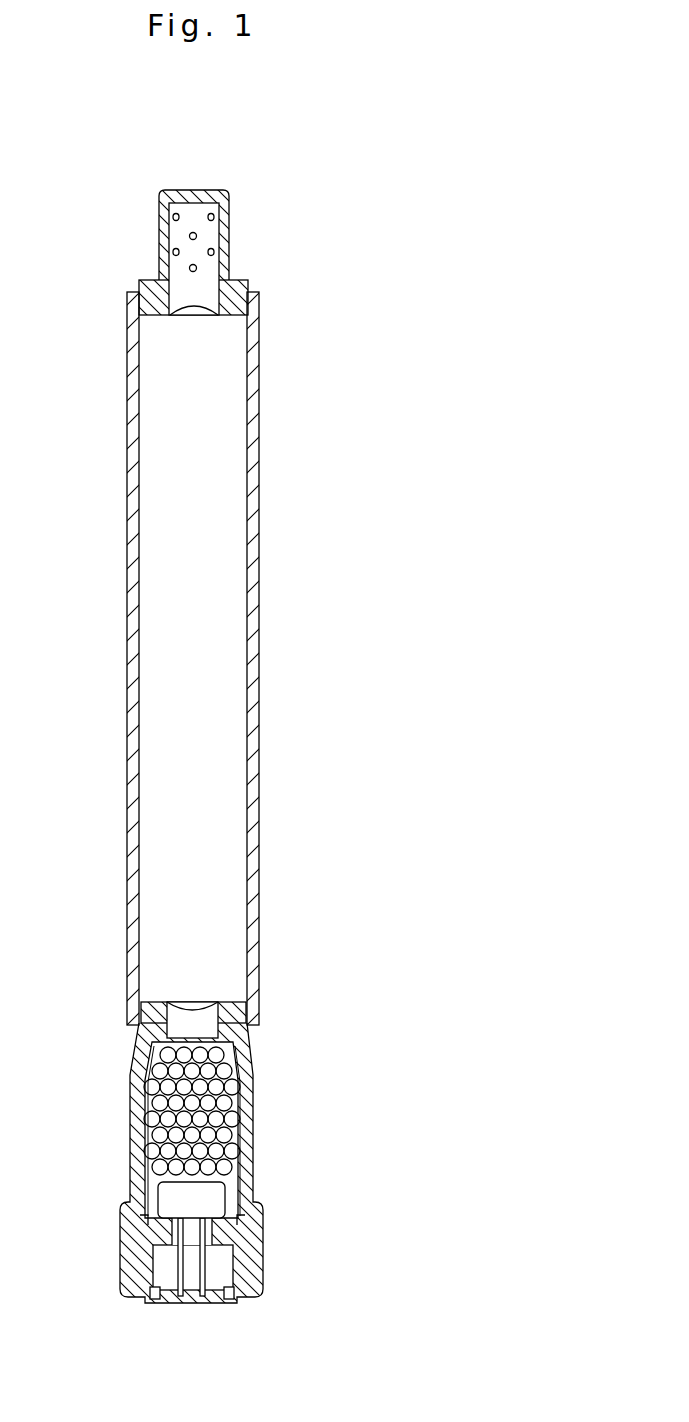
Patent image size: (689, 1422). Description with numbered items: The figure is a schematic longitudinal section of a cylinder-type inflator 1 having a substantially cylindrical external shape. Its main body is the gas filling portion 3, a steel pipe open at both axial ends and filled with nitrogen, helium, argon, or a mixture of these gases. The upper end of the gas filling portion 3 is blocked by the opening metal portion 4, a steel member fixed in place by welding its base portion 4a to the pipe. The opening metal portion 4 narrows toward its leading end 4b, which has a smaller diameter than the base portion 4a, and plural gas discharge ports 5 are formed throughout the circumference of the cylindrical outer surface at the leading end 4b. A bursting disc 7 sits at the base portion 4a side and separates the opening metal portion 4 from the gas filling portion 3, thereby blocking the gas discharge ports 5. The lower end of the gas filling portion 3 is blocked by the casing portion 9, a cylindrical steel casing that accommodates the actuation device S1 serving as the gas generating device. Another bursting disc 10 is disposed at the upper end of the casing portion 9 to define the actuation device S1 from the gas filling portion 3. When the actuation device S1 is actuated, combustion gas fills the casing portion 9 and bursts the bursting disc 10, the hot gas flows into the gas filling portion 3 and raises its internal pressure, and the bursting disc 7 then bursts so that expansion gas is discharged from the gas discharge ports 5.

The inflator 1 is at (379, 278).
The gas filling portion 3 is at (261, 590).
The opening metal portion 4 is at (220, 239).
The base portion 4a is at (246, 300).
The leading end 4b is at (229, 197).
The gas discharge port 5 is at (189, 236).
The bursting disc 7 is at (193, 312).
The casing portion 9 is at (249, 1097).
The bursting disc 10 is at (197, 1007).
The actuation device S1 is at (244, 1207).